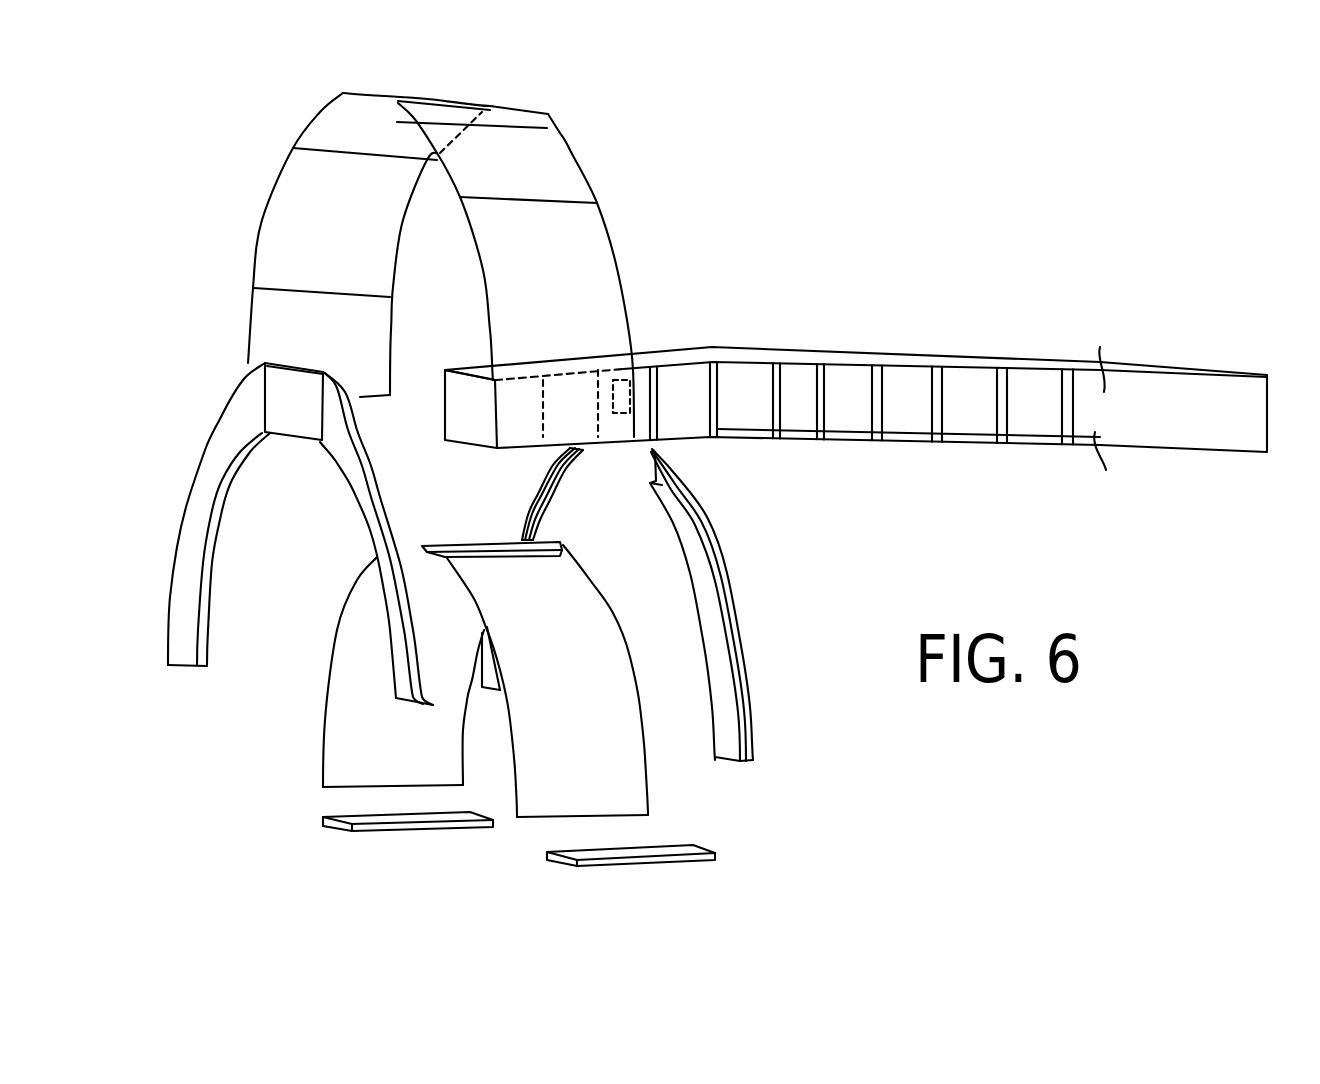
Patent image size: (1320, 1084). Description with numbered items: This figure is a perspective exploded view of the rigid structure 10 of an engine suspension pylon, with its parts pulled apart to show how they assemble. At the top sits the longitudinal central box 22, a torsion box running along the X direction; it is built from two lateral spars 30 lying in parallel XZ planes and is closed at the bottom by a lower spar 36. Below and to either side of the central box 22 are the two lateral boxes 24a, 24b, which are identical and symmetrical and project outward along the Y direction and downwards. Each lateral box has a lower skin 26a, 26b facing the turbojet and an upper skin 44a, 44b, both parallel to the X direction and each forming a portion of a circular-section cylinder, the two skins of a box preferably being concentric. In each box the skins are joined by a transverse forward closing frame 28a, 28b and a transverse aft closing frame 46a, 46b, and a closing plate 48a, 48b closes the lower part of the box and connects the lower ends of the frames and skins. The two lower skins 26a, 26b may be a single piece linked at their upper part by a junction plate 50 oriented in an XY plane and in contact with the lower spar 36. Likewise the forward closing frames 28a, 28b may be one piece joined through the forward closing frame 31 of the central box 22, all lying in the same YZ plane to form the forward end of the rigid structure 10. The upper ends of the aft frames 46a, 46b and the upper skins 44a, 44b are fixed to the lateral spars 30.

The rigid structure 10 is at (1062, 265).
The longitudinal central box 22 is at (920, 356).
The lateral spars 30 is at (1165, 366).
The lower spar 36 is at (466, 446).
The lateral box 24a is at (500, 862).
The lateral box 24b is at (196, 240).
The lower skin 26a is at (635, 782).
The lower skin 26b is at (325, 718).
The forward closing frame 28a is at (367, 497).
The forward closing frame 28b is at (198, 500).
The forward closing frame 31 is at (285, 403).
The upper skin 44a is at (603, 232).
The upper skin 44b is at (277, 187).
The aft closing frame 46a is at (713, 592).
The aft closing frame 46b is at (538, 498).
The closing plate 48a is at (653, 860).
The closing plate 48b is at (337, 823).
The junction plate 50 is at (465, 543).